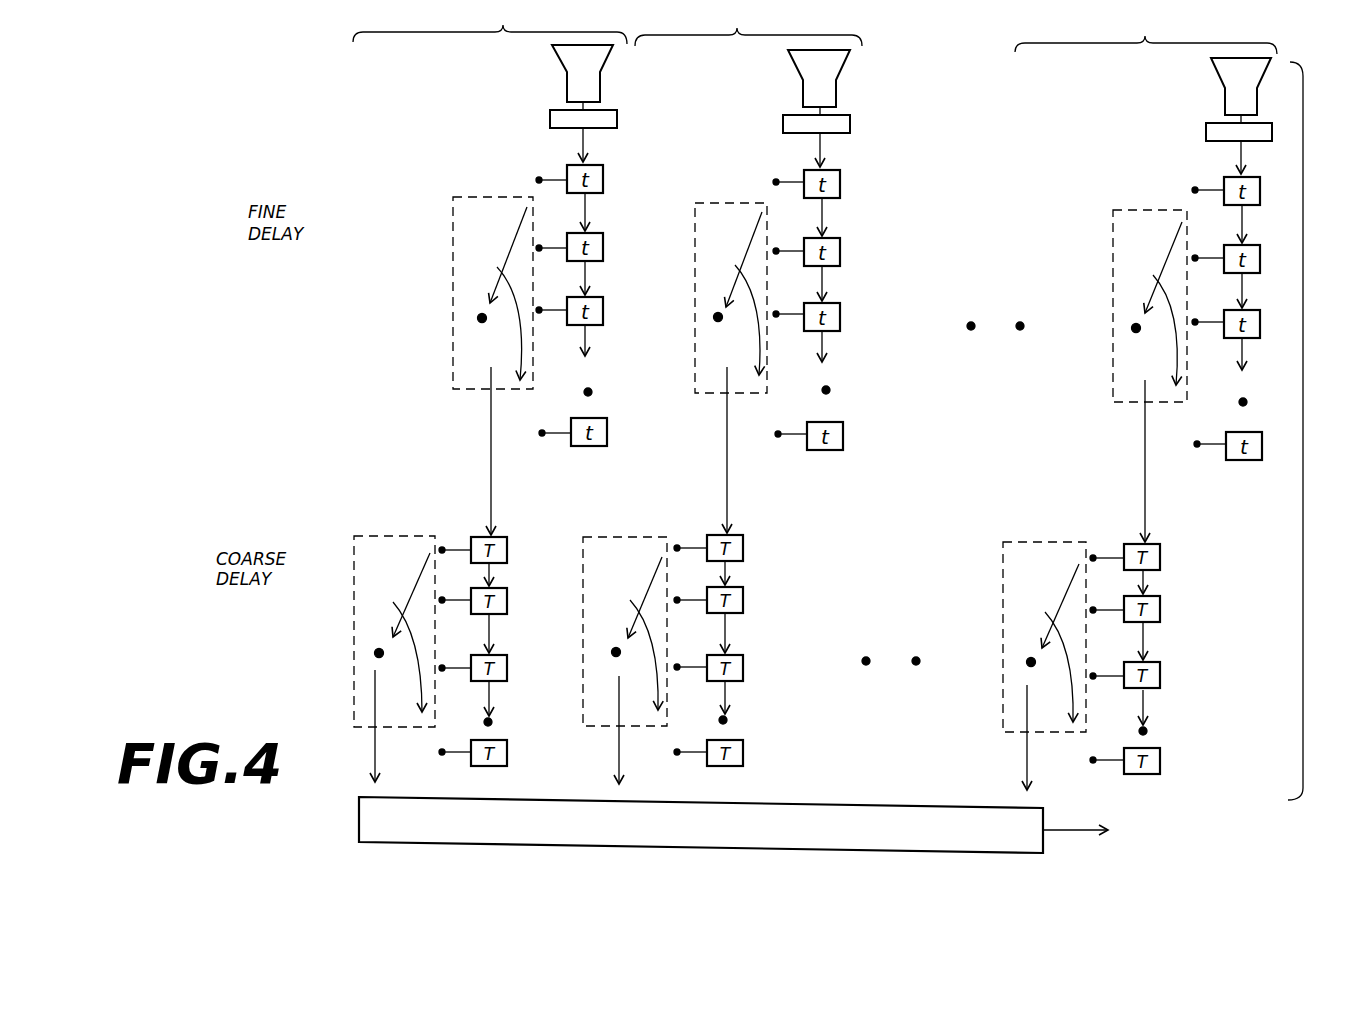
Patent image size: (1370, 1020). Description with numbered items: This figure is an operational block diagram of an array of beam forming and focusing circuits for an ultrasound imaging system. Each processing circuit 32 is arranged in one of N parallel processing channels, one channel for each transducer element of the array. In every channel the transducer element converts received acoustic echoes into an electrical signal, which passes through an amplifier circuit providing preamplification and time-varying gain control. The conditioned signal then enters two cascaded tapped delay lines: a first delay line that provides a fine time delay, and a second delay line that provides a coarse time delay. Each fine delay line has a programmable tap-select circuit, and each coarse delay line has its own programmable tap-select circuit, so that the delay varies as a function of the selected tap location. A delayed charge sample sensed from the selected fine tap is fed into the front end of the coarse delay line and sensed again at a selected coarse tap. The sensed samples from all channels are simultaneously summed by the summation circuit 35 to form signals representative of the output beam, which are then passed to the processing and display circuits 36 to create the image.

The processing circuit 32 is at (1314, 431).
The summation circuit 35 is at (359, 821).
The processing and display circuits 36 is at (1128, 836).